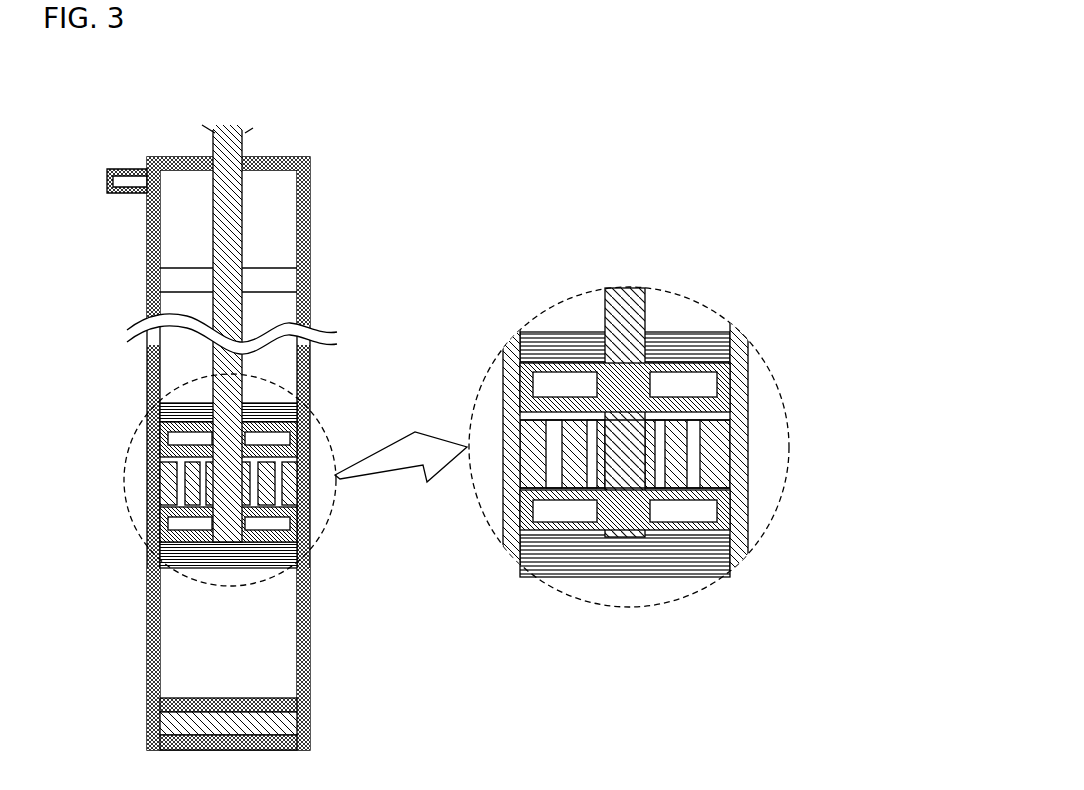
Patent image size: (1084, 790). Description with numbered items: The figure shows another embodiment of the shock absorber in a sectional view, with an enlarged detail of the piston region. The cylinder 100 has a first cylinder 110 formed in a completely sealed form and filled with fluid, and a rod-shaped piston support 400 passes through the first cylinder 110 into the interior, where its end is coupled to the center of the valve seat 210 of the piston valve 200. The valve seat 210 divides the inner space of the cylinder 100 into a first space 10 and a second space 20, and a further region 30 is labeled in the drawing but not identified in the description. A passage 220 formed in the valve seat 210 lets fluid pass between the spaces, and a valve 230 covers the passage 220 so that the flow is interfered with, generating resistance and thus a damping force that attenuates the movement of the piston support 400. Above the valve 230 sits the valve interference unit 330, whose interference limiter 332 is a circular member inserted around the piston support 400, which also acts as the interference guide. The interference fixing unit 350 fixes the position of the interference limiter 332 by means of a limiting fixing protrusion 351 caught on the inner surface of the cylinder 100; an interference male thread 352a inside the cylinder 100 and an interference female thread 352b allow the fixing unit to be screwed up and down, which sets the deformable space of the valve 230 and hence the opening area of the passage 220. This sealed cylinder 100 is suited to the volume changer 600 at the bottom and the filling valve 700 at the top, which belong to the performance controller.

The first space 10 is at (163, 352).
The second space 20 is at (165, 639).
The first chamber 30 is at (163, 222).
The cylinder 100 is at (93, 396).
The first cylinder 110 is at (147, 443).
The piston valve 200 is at (538, 434).
The valve seat 210 is at (748, 418).
The passage 220 is at (860, 472).
The valve 230 is at (748, 390).
The valve interference unit 330 is at (698, 335).
The interference limiter 332 is at (733, 333).
The interference fixing unit 350 is at (740, 387).
The limiting fixing protrusion 351 is at (747, 342).
The interference male thread 352a is at (748, 344).
The interference female thread 352b is at (748, 361).
The piston support 400 is at (243, 155).
The volume changer 600 is at (150, 732).
The filling valve 700 is at (147, 175).